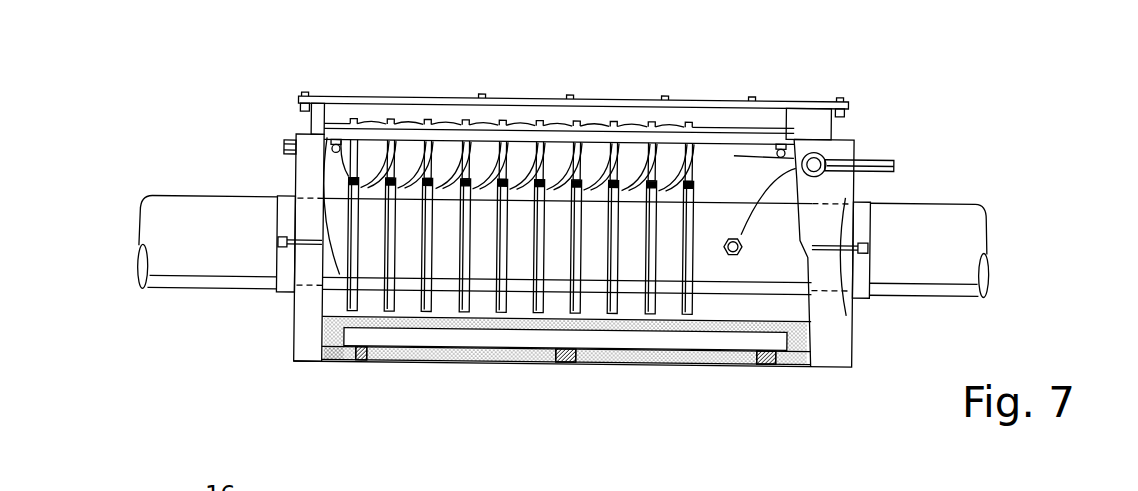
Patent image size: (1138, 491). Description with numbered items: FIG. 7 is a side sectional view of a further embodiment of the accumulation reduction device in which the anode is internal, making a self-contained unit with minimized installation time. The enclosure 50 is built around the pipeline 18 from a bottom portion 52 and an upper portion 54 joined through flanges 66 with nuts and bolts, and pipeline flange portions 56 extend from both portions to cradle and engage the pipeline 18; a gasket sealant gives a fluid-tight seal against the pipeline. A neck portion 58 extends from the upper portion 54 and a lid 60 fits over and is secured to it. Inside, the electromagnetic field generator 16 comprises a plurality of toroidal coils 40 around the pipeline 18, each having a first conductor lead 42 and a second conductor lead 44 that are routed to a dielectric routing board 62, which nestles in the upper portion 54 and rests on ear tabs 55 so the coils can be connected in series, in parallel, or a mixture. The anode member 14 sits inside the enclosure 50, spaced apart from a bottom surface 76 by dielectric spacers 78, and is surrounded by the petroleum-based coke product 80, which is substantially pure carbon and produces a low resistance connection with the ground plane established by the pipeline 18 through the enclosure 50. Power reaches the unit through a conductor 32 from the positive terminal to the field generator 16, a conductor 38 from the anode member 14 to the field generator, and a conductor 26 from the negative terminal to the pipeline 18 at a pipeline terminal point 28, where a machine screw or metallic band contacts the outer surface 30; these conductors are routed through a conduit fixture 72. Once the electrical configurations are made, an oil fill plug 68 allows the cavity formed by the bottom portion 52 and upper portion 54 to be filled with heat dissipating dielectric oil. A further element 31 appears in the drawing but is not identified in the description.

The anode member 14 is at (600, 343).
The electromagnetic field generator 16 is at (298, 68).
The pipeline 18 is at (985, 212).
The conductor 26 is at (741, 231).
The pipeline terminal point 28 is at (737, 253).
The outer surface 30 is at (967, 244).
The pipe end 31 is at (988, 272).
The conductor 32 is at (733, 153).
The conductor 38 is at (327, 301).
The toroidal coil 40 is at (416, 309).
The first conductor lead 42 is at (323, 149).
The second conductor lead 44 is at (327, 157).
The enclosure 50 is at (292, 331).
The bottom portion 52 is at (293, 345).
The upper portion 54 is at (298, 186).
The ear tabs 55 is at (336, 148).
The pipeline flange portions 56 is at (283, 270).
The neck portion 58 is at (307, 120).
The lid 60 is at (337, 101).
The dielectric routing board 62 is at (408, 130).
The flanges 66 is at (845, 195).
The oil fill plug 68 is at (288, 150).
The conduit fixture 72 is at (872, 155).
The bottom surface 76 is at (670, 366).
The dielectric spacers 78 is at (358, 364).
The petroleum-based coke product 80 is at (802, 351).